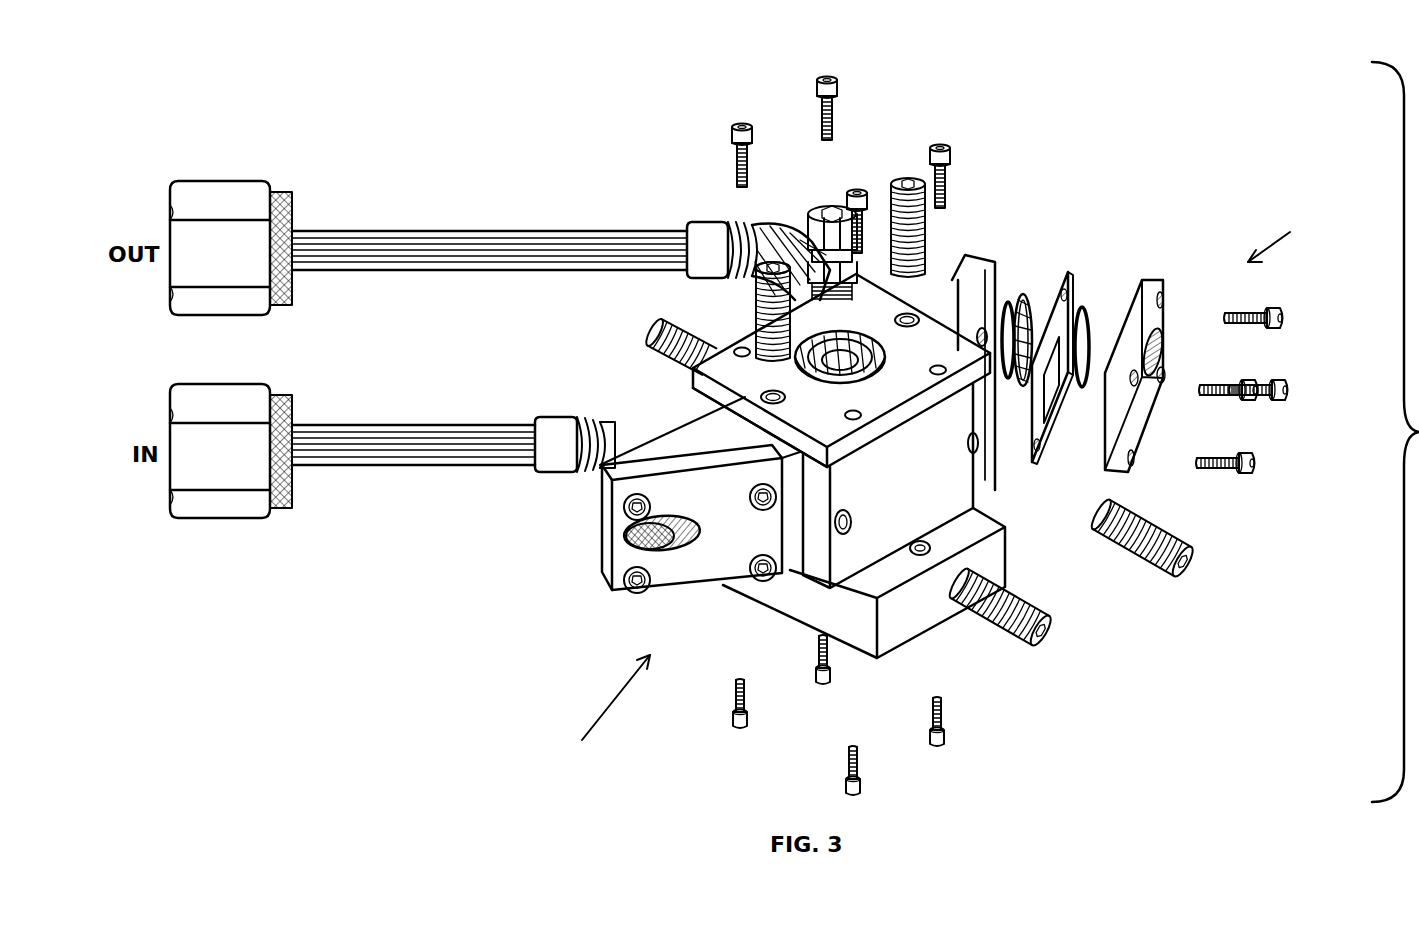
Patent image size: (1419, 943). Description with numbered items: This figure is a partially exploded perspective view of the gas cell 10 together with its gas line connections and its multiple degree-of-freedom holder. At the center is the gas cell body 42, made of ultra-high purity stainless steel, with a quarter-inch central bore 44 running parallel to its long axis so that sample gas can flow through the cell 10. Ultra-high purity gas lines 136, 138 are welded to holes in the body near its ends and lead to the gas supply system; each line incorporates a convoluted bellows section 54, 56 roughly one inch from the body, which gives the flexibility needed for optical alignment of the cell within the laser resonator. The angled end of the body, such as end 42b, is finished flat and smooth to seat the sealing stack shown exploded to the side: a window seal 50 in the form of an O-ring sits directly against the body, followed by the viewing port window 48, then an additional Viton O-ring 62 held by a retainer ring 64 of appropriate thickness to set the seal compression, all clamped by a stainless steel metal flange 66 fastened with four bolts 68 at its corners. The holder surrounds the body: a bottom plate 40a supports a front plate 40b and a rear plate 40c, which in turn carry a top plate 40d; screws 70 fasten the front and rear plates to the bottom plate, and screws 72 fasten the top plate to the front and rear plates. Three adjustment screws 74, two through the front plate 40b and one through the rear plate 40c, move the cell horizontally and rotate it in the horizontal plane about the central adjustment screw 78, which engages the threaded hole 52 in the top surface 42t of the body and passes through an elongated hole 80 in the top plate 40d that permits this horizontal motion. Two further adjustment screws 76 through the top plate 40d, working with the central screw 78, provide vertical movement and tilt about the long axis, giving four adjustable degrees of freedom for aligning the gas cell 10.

The gas cell 10 is at (939, 491).
The bottom plate 40a is at (1010, 575).
The front plate 40b is at (1000, 520).
The rear plate 40c is at (700, 400).
The top plate 40d is at (922, 407).
The gas cell body 42 is at (790, 520).
The top surface of the gas cell body 42t is at (995, 260).
The end of the gas cell body 42b is at (1005, 300).
The central bore 44 is at (650, 548).
The viewing port window 48 is at (1015, 305).
The window seal 50 is at (1028, 296).
The threaded hole 52 is at (850, 370).
The bellows section 54 is at (545, 470).
The bellows section 56 is at (690, 228).
The Viton O-ring 62 is at (1075, 292).
The retainer ring 64 is at (1085, 308).
The metal flange 66 is at (1148, 300).
The bolts 68 is at (1284, 388).
The screws 70 is at (820, 682).
The screws 72 is at (817, 98).
The adjustment screws 74 is at (652, 338).
The adjustment screws 76 is at (925, 195).
The central adjustment screw 78 is at (825, 210).
The elongated hole 80 is at (790, 298).
The gas line 136 is at (408, 468).
The gas line 138 is at (402, 225).